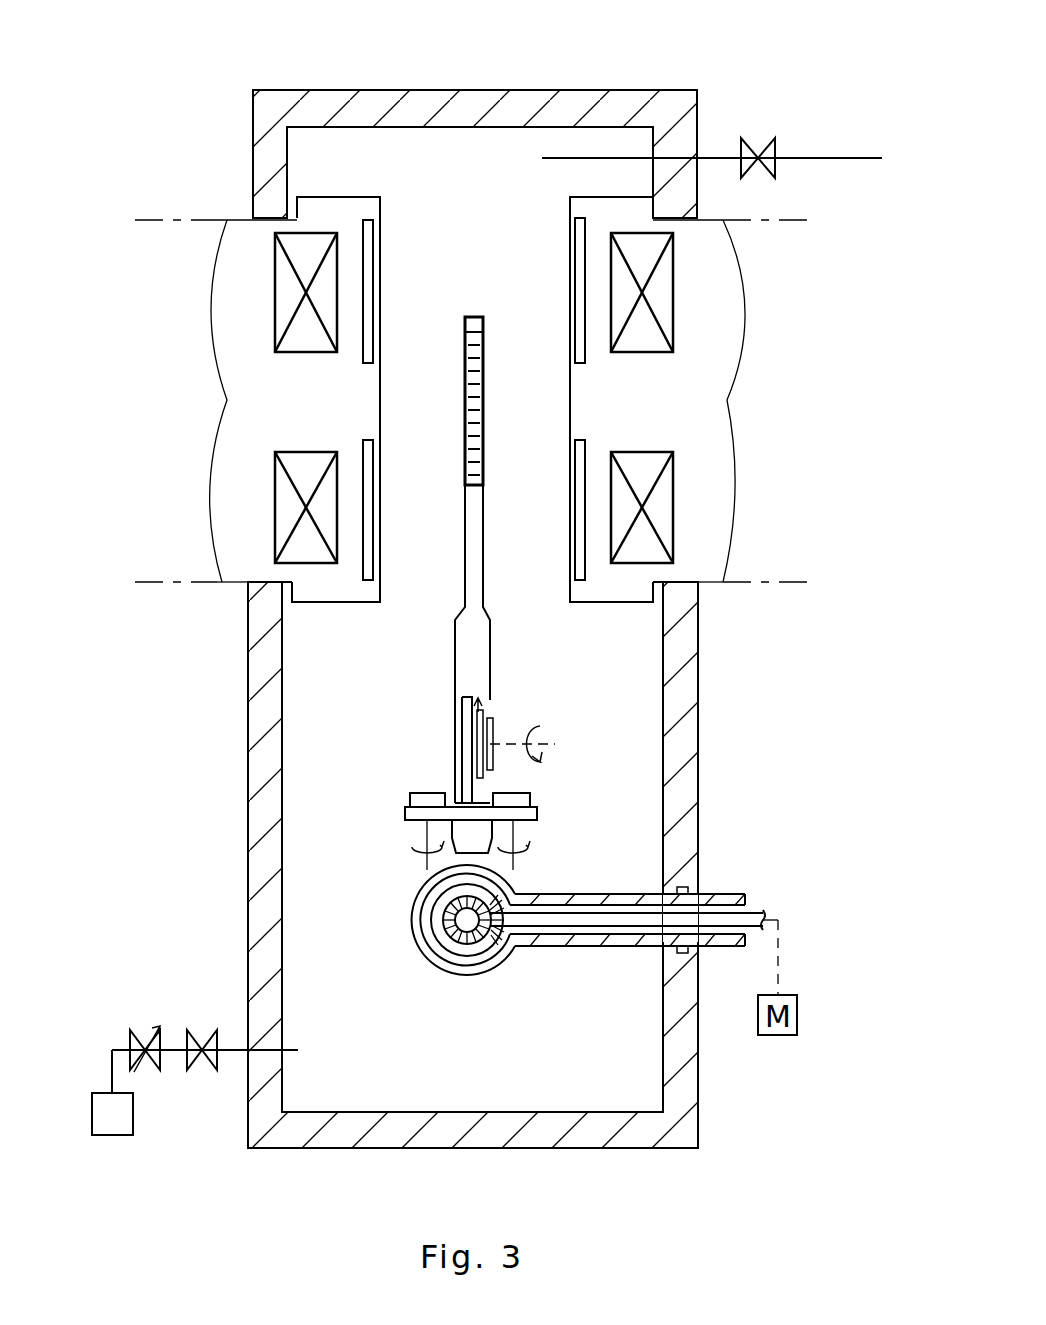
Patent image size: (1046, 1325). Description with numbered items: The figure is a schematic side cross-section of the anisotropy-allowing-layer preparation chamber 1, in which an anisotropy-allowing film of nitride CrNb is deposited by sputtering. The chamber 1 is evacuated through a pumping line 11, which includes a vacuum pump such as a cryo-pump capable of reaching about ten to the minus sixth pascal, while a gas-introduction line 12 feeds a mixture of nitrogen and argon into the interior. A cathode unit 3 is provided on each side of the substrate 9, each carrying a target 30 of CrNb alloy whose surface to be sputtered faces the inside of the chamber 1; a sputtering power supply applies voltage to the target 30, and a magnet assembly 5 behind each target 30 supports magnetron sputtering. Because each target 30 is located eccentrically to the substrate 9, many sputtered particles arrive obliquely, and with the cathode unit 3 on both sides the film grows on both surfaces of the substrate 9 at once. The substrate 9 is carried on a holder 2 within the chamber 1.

The anisotropy-allowing-layer preparation chamber 1 is at (250, 770).
The sample holder rod 2 is at (482, 672).
The cathode unit 3 is at (240, 405).
The magnet assembly 5 is at (318, 245).
The substrate 9 is at (483, 465).
The pumping line 11 is at (112, 1070).
The gas-introduction line 12 is at (827, 158).
The target 30 is at (568, 256).